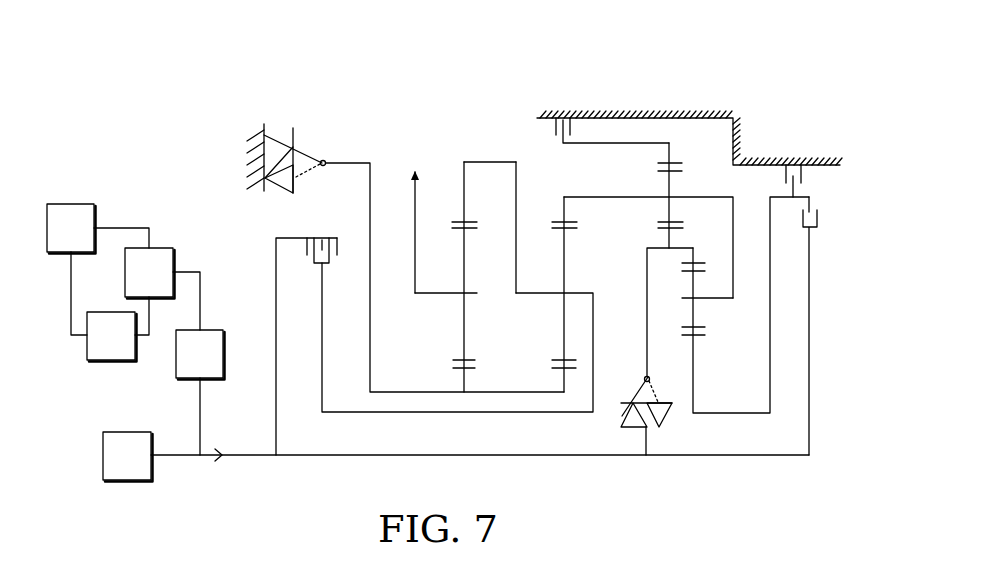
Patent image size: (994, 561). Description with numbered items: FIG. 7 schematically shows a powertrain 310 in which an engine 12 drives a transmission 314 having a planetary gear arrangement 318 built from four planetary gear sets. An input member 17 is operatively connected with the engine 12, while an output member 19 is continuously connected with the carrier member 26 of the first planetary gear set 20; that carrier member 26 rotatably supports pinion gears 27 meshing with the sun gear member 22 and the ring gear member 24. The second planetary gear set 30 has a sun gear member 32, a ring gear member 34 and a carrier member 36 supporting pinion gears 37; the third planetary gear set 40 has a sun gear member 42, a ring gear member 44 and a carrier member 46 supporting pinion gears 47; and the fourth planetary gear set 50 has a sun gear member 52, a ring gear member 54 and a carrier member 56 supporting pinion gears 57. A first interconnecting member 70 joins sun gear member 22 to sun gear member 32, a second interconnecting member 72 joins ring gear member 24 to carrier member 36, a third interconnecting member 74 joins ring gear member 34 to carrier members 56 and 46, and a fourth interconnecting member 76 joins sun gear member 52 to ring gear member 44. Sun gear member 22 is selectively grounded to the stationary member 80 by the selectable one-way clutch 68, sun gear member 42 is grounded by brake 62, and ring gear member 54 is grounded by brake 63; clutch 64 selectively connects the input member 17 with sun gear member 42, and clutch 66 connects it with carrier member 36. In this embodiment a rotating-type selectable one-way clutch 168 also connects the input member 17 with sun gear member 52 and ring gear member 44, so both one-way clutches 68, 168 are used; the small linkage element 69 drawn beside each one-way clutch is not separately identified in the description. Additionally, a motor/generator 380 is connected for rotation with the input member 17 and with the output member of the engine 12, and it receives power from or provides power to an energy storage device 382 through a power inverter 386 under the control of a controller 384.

The engine 12 is at (117, 465).
The input member 17 is at (255, 458).
The output member 19 is at (414, 237).
The first planetary gear set 20 is at (440, 377).
The sun gear member 22 is at (472, 368).
The ring gear member 24 is at (463, 220).
The carrier member 26 is at (458, 292).
The pinion gears 27 is at (465, 245).
The second planetary gear set 30 is at (577, 378).
The sun gear member 32 is at (553, 368).
The ring gear member 34 is at (563, 220).
The carrier member 36 is at (578, 298).
The pinion gears 37 is at (566, 264).
The third planetary gear set 40 is at (713, 341).
The sun gear member 42 is at (692, 337).
The ring gear member 44 is at (694, 258).
The carrier member 46 is at (712, 300).
The pinion gears 47 is at (692, 318).
The fourth planetary gear set 50 is at (681, 182).
The sun gear member 52 is at (668, 230).
The ring gear member 54 is at (668, 158).
The carrier member 56 is at (648, 195).
The pinion gears 57 is at (670, 202).
The torque-transmitting mechanism 62 is at (807, 179).
The torque-transmitting mechanism 63 is at (546, 130).
The torque-transmitting mechanism 64 is at (823, 224).
The torque-transmitting mechanism 66 is at (338, 268).
The selectable one-way clutch 68 is at (296, 122).
The actuation link of one-way clutch 69 is at (309, 152).
The first interconnecting member 70 is at (517, 394).
The second interconnecting member 72 is at (516, 183).
The third interconnecting member 74 is at (599, 195).
The fourth interconnecting member 76 is at (680, 249).
The stationary member 80 is at (255, 130).
The selectable one-way clutch 168 is at (678, 433).
The powertrain 310 is at (444, 72).
The transmission 314 is at (609, 71).
The planetary gear arrangement 318 is at (452, 166).
The motor/generator 380 is at (185, 363).
The energy storage device 382 is at (56, 237).
The controller 384 is at (96, 345).
The power inverter 386 is at (134, 281).